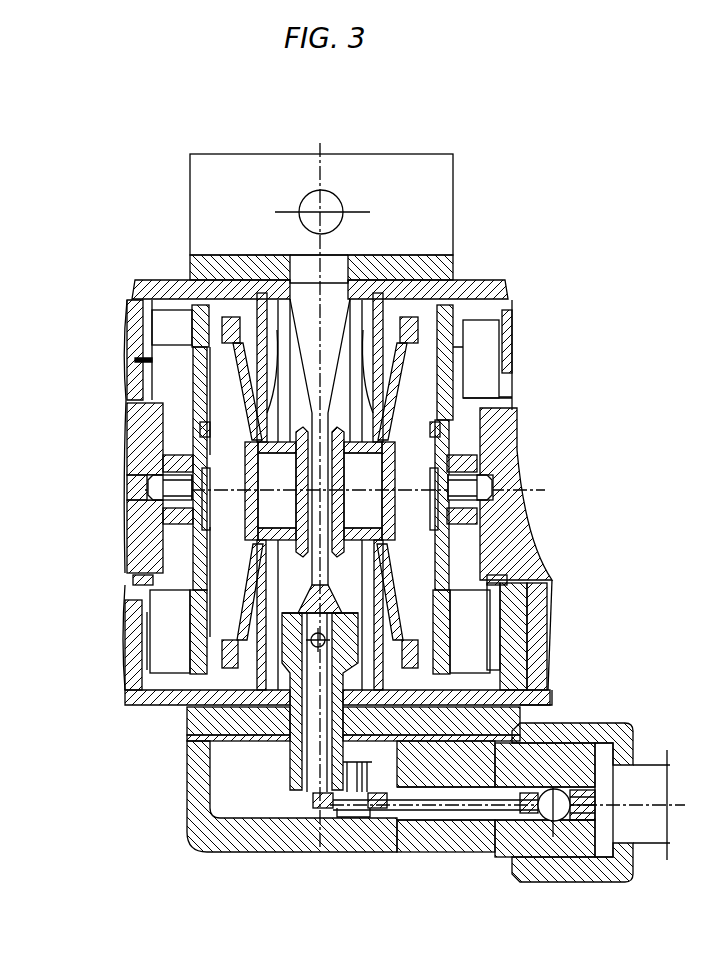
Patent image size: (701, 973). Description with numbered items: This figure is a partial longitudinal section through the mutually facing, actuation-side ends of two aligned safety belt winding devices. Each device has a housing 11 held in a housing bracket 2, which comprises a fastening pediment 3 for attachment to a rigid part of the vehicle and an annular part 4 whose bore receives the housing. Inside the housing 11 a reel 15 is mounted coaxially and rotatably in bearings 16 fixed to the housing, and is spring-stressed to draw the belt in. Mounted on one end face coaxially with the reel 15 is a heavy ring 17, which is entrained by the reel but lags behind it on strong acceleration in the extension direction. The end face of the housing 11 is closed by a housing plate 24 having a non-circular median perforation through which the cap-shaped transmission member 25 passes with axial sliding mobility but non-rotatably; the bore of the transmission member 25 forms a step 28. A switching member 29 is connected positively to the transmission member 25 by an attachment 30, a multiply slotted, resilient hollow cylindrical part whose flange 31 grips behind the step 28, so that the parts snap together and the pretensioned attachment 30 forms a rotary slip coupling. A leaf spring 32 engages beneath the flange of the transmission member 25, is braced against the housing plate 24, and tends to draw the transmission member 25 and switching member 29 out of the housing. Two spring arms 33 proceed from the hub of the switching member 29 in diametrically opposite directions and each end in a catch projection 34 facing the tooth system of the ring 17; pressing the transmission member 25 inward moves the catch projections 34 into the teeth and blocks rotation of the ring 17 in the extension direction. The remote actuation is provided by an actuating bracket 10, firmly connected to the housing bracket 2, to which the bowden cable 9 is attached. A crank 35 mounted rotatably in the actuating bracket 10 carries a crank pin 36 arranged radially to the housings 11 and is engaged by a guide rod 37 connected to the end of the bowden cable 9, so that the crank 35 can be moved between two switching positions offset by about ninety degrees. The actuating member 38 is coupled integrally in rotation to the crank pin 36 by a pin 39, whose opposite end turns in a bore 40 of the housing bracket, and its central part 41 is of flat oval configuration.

The housing bracket 2 is at (190, 722).
The fastening pediment 3 is at (190, 202).
The annular part 4 is at (190, 268).
The bowden cable 9 is at (582, 817).
The actuating bracket 10 is at (193, 808).
The housing 11 is at (160, 285).
The reel 15 is at (507, 533).
The bearing 16 is at (550, 666).
The heavy ring 17 is at (152, 332).
The housing plate 24 is at (192, 306).
The transmission member 25 is at (240, 453).
The step 28 is at (160, 488).
The switching member 29 is at (172, 440).
The attachment 30 is at (150, 552).
The flange 31 is at (210, 582).
The leaf spring 32 is at (295, 598).
The spring arm 33 is at (250, 392).
The catch projection 34 is at (225, 655).
The crank 35 is at (355, 778).
The crank pin 36 is at (450, 714).
The guide rod 37 is at (430, 798).
The actuating member 38 is at (480, 607).
The pin 39 is at (480, 653).
The bore 40 is at (353, 270).
The central part 41 is at (478, 491).